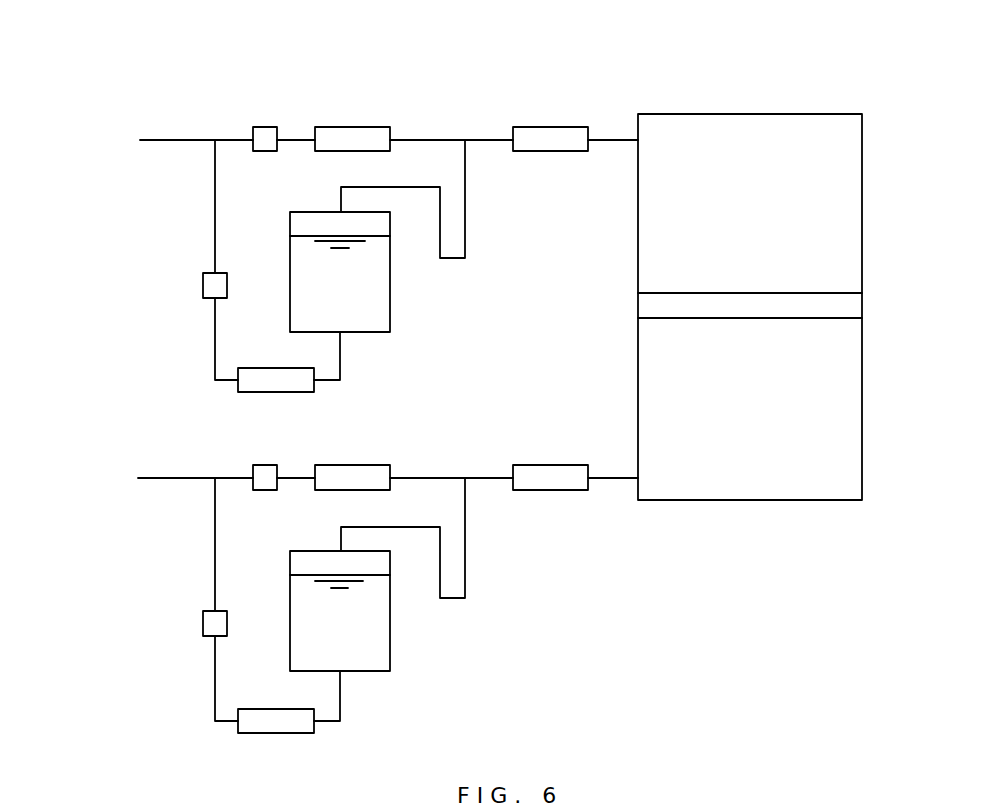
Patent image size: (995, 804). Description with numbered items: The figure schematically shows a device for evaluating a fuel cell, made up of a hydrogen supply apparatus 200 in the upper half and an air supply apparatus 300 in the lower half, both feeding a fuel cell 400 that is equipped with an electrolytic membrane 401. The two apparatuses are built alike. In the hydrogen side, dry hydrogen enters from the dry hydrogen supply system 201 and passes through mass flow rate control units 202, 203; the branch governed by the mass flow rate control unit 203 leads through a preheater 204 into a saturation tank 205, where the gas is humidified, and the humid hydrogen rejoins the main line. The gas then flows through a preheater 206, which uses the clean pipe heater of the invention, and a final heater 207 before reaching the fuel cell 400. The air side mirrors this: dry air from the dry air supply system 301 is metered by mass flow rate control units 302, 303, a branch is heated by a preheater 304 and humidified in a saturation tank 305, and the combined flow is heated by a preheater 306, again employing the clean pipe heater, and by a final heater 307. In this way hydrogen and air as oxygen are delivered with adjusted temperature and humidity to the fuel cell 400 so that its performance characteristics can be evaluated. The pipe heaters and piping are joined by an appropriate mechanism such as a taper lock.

The hydrogen supply apparatus 200 is at (136, 364).
The dry hydrogen supply system 201 is at (157, 142).
The mass flow rate control unit 202 is at (264, 135).
The mass flow rate control unit 203 is at (206, 285).
The preheater 204 is at (266, 379).
The saturation tank 205 is at (364, 297).
The preheater 206 is at (352, 136).
The final heater 207 is at (552, 136).
The air supply apparatus 300 is at (133, 705).
The dry air supply system 301 is at (156, 480).
The mass flow rate control unit 302 is at (264, 473).
The mass flow rate control unit 303 is at (206, 624).
The preheater 304 is at (266, 720).
The saturation tank 305 is at (364, 637).
The preheater 306 is at (352, 474).
The final heater 307 is at (552, 474).
The fuel cell 400 is at (740, 535).
The electrolytic membrane 401 is at (733, 306).